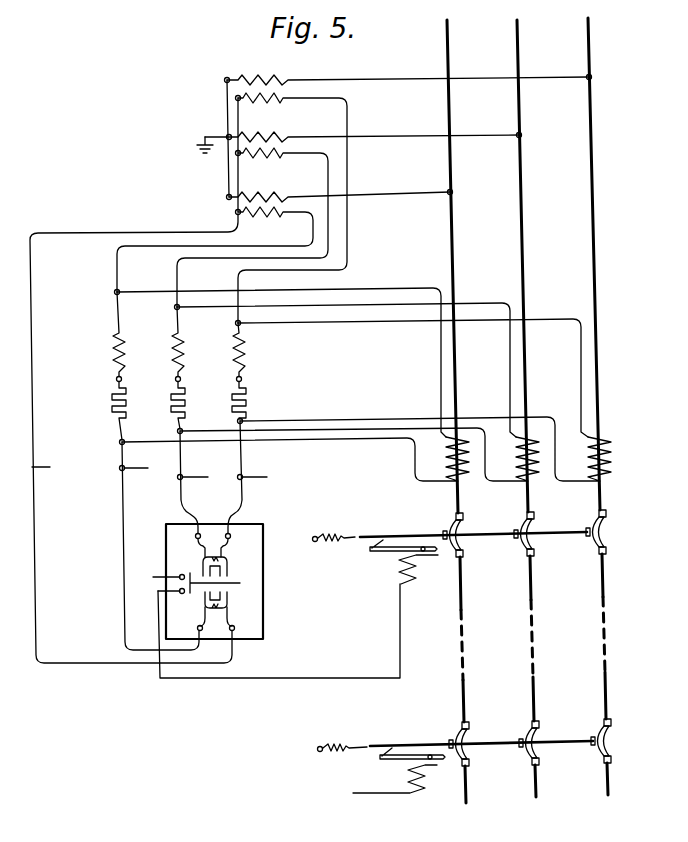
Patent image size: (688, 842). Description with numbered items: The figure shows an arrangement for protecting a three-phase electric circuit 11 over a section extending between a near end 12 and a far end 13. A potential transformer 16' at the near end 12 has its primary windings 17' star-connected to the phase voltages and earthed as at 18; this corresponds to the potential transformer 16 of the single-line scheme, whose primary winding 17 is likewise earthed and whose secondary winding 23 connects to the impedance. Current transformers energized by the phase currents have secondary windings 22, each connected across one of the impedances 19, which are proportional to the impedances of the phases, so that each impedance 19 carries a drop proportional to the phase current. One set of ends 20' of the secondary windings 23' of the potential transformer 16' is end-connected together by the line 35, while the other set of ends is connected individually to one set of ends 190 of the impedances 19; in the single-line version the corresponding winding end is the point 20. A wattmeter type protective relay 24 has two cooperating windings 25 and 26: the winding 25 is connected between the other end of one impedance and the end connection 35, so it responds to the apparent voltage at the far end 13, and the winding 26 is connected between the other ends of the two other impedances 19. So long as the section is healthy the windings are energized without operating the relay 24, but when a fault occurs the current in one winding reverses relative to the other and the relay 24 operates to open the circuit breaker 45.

The three-phase electric circuit 11 is at (610, 229).
The near end 12 is at (547, 33).
The far end 13 is at (465, 761).
The potential transformer 16 is at (216, 146).
The potential transformer 16' is at (216, 146).
The primary winding 17 is at (398, 127).
The primary windings 17' is at (398, 127).
The earth connection 18 is at (200, 148).
The impedance 19 is at (247, 392).
The set of ends of the impedances 190 is at (241, 325).
The tap point 20 is at (234, 160).
The set of ends of the secondary windings 20' is at (234, 160).
The secondary winding of current transformer 22 is at (585, 464).
The secondary winding of the potential transformer 23 is at (232, 208).
The secondary windings of the potential transformer 23' is at (232, 208).
The protective relay 24 is at (274, 601).
The relay winding 25 is at (227, 600).
The relay winding 26 is at (205, 563).
The line 35 is at (78, 233).
The circuit breaker 45 is at (608, 530).